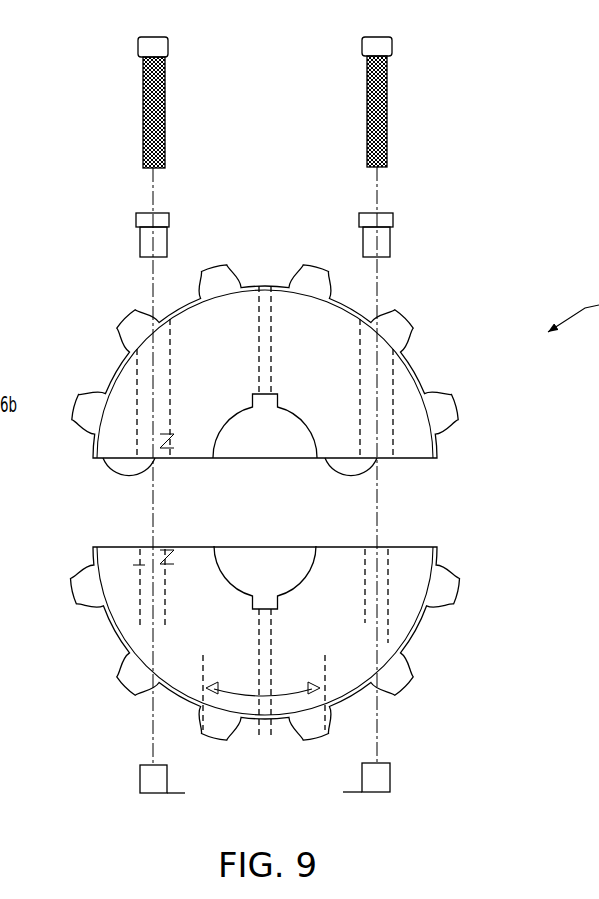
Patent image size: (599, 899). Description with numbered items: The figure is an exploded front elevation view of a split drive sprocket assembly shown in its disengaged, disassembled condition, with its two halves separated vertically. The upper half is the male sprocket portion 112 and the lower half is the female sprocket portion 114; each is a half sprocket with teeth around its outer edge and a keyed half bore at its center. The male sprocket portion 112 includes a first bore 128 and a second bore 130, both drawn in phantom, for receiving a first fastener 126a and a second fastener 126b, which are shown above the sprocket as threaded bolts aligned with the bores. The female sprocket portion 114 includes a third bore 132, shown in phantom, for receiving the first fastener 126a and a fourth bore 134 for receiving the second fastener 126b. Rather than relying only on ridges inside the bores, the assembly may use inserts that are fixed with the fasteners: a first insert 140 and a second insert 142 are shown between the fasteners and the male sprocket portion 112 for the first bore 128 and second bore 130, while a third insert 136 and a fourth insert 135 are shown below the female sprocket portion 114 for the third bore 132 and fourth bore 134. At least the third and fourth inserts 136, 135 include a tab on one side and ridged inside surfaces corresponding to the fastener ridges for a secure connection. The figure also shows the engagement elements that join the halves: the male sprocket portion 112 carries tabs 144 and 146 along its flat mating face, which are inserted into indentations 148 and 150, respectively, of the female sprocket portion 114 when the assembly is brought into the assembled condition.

The male sprocket portion 112 is at (125, 365).
The female sprocket portion 114 is at (110, 623).
The first fastener 126a is at (142, 108).
The second fastener 126b is at (390, 100).
The first bore 128 is at (137, 408).
The second bore 130 is at (392, 386).
The third bore 132 is at (140, 597).
The fourth bore 134 is at (388, 580).
The fourth insert 135 is at (390, 777).
The third insert 136 is at (138, 780).
The first insert 140 is at (165, 240).
The second insert 142 is at (390, 240).
The tab 144 is at (132, 480).
The tab 146 is at (380, 462).
The indentation 148 is at (133, 565).
The indentation 150 is at (337, 555).